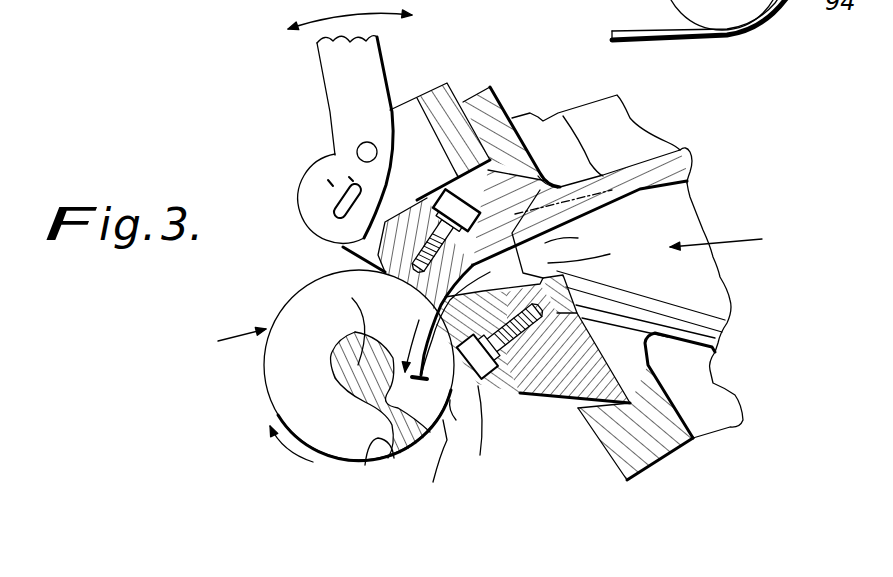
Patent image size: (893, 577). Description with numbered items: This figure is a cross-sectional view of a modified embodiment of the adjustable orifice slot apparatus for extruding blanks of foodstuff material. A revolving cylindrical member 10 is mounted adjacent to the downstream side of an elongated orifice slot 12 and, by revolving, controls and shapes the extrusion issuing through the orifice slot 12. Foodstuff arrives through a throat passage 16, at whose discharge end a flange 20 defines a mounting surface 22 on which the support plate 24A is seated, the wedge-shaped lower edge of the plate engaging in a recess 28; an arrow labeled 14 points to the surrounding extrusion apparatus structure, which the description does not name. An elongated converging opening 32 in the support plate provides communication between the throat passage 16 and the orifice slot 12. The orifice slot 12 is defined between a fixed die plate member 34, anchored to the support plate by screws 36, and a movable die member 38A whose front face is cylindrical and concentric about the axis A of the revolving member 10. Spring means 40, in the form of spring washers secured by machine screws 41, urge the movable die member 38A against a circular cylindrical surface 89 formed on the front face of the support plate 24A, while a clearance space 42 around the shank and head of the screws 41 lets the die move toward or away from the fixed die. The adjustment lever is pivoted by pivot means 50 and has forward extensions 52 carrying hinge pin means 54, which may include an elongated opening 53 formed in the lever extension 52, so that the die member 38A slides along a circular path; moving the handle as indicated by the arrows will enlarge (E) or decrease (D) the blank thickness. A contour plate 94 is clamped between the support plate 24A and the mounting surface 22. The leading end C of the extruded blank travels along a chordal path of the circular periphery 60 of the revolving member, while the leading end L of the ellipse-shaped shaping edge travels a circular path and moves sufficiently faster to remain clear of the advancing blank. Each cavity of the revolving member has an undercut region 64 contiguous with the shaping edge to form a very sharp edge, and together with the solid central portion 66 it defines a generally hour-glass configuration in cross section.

The revolving cylindrical member 10 is at (230, 332).
The elongated orifice slot 12 is at (465, 279).
The tool holder assembly 14 is at (745, 236).
The throat passage 16 is at (605, 203).
The flange 20 is at (683, 401).
The mounting surface 22 is at (567, 365).
The support plate 24A is at (543, 407).
The recess 28 is at (573, 407).
The elongated converging opening 32 is at (579, 233).
The fixed die plate member 34 is at (478, 435).
The screws 36 is at (519, 394).
The movable die member 38A is at (377, 258).
The spring means 40 is at (433, 190).
The machine screws 41 is at (458, 180).
The clearance space 42 is at (480, 213).
The pivot means 50 is at (358, 143).
The forward extensions 52 is at (330, 200).
The elongated openings 53 is at (347, 182).
The hinge pin means 54 is at (340, 217).
The circular periphery 60 is at (267, 382).
The undercut region 64 is at (365, 462).
The central portion 66 is at (335, 372).
The circular cylindrical surface 89 is at (546, 184).
The contour plate 94 is at (596, 250).
The axis A is at (346, 324).
The leading end of the blank C is at (461, 421).
The decrease arrow D is at (340, 29).
The enlarge arrow E is at (428, 18).
The leading end of the shaping edge L is at (440, 456).